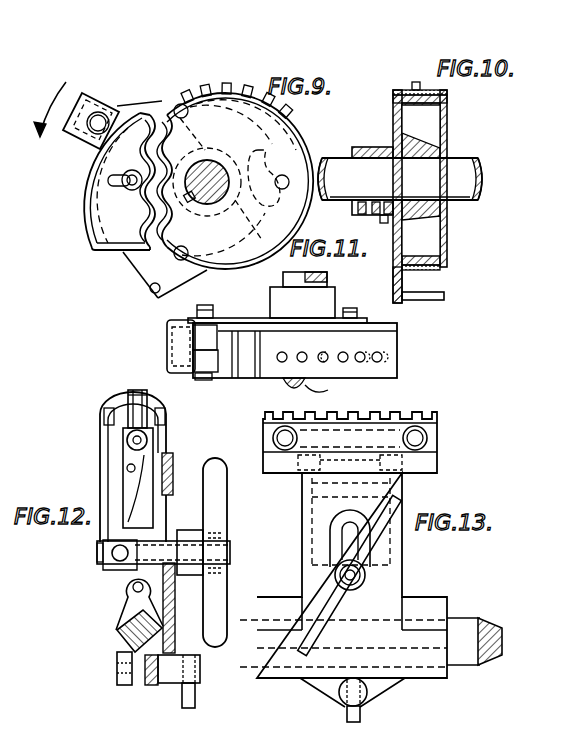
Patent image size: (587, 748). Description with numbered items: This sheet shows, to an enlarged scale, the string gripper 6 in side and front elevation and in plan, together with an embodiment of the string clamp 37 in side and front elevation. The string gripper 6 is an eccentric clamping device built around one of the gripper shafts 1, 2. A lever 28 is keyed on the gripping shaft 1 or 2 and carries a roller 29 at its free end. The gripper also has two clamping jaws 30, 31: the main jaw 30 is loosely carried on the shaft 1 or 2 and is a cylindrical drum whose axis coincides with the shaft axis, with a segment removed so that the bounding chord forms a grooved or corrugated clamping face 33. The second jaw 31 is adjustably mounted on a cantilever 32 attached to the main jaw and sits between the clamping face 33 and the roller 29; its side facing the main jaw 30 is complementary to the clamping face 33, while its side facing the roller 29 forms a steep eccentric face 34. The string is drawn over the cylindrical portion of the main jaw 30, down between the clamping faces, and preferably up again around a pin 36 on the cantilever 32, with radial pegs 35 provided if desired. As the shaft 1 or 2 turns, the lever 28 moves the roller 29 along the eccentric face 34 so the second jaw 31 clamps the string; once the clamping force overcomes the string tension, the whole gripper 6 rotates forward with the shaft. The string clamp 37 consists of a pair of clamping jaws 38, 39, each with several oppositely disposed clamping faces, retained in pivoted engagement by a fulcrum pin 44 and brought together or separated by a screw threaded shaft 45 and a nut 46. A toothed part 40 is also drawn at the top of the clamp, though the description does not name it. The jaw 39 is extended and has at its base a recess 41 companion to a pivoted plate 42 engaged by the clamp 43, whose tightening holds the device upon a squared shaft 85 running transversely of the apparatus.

In FIG. 9, the gripping shaft 1 is at (216, 162).
In FIG. 10, the gripping shaft 1 is at (456, 160).
In FIG. 11, the gripping shaft 1 is at (284, 279).
In FIG. 10, the gripping shaft 2 is at (466, 201).
In FIG. 9, the string gripper 6 is at (260, 162).
In FIG. 10, the string gripper 6 is at (393, 108).
In FIG. 11, the string gripper 6 is at (385, 374).
In FIG. 9, the lever 28 is at (86, 140).
In FIG. 11, the lever 28 is at (238, 318).
In FIG. 9, the roller 29 is at (108, 110).
In FIG. 11, the roller 29 is at (212, 360).
In FIG. 9, the main clamping jaw 30 is at (256, 141).
In FIG. 10, the main clamping jaw 30 is at (392, 236).
In FIG. 11, the main clamping jaw 30 is at (387, 343).
In FIG. 9, the second clamping jaw 31 is at (100, 233).
In FIG. 11, the second clamping jaw 31 is at (242, 368).
In FIG. 9, the cantilever 32 is at (152, 268).
In FIG. 10, the cantilever 32 is at (393, 285).
In FIG. 9, the clamping face 33 is at (128, 258).
In FIG. 9, the eccentric face 34 is at (90, 205).
In FIG. 9, the radial pegs 35 is at (226, 83).
In FIG. 10, the radial pegs 35 is at (412, 88).
In FIG. 9, the pin 36 is at (157, 293).
In FIG. 10, the pin 36 is at (430, 300).
In FIG. 12, the string clamp 37 is at (108, 467).
In FIG. 13, the string clamp 37 is at (385, 558).
In FIG. 12, the clamping jaw 38 is at (105, 418).
In FIG. 12, the clamping jaw 39 is at (156, 438).
In FIG. 13, the clamping jaw 39 is at (430, 463).
In FIG. 11, the toothed rack 40 is at (319, 393).
In FIG. 12, the toothed rack 40 is at (134, 394).
In FIG. 13, the toothed rack 40 is at (362, 410).
In FIG. 12, the recess 41 is at (163, 618).
In FIG. 12, the pivoted plate 42 is at (115, 632).
In FIG. 12, the clamp 43 is at (172, 687).
In FIG. 13, the clamp 43 is at (362, 692).
In FIG. 12, the fulcrum pin 44 is at (127, 440).
In FIG. 13, the fulcrum pin 44 is at (405, 474).
In FIG. 12, the screw threaded shaft 45 is at (128, 556).
In FIG. 13, the screw threaded shaft 45 is at (340, 578).
In FIG. 12, the nut 46 is at (103, 568).
In FIG. 12, the squared shaft 85 is at (117, 647).
In FIG. 13, the squared shaft 85 is at (462, 634).